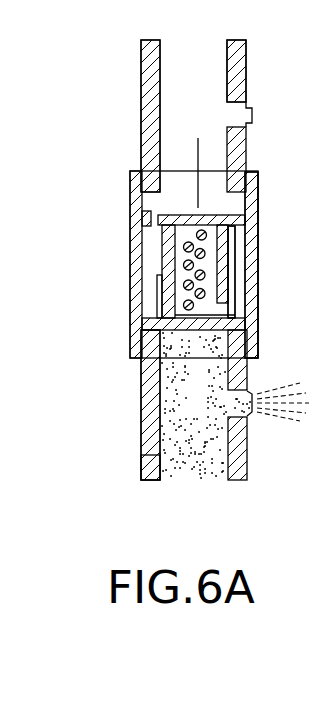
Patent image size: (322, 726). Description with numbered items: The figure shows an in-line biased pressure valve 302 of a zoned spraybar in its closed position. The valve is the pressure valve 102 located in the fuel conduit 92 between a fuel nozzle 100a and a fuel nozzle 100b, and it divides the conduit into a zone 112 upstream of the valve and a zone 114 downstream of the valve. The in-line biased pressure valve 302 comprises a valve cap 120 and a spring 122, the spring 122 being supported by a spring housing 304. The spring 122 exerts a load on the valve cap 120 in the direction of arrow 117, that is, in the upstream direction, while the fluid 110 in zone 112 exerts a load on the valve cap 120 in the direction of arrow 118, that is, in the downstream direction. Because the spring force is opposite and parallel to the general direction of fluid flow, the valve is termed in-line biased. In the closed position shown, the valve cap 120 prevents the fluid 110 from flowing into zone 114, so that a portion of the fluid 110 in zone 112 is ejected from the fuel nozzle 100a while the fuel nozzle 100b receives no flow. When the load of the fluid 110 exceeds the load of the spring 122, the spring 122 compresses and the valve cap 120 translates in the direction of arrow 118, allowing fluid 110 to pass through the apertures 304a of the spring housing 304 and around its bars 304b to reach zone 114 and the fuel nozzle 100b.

The fuel conduit 92 is at (149, 72).
The fuel nozzle 100a is at (266, 429).
The fuel nozzle 100b is at (263, 92).
The pressure valve 102 is at (110, 288).
The fluid 110 is at (172, 463).
The zone 112 is at (95, 328).
The zone 114 is at (102, 30).
The arrow 117 is at (198, 200).
The arrow 118 is at (193, 340).
The valve cap 120 is at (228, 321).
The spring 122 is at (205, 273).
The in-line biased pressure valve 302 is at (249, 175).
The spring housing 304 is at (173, 214).
The apertures 304a is at (150, 238).
The bars 304b is at (238, 240).